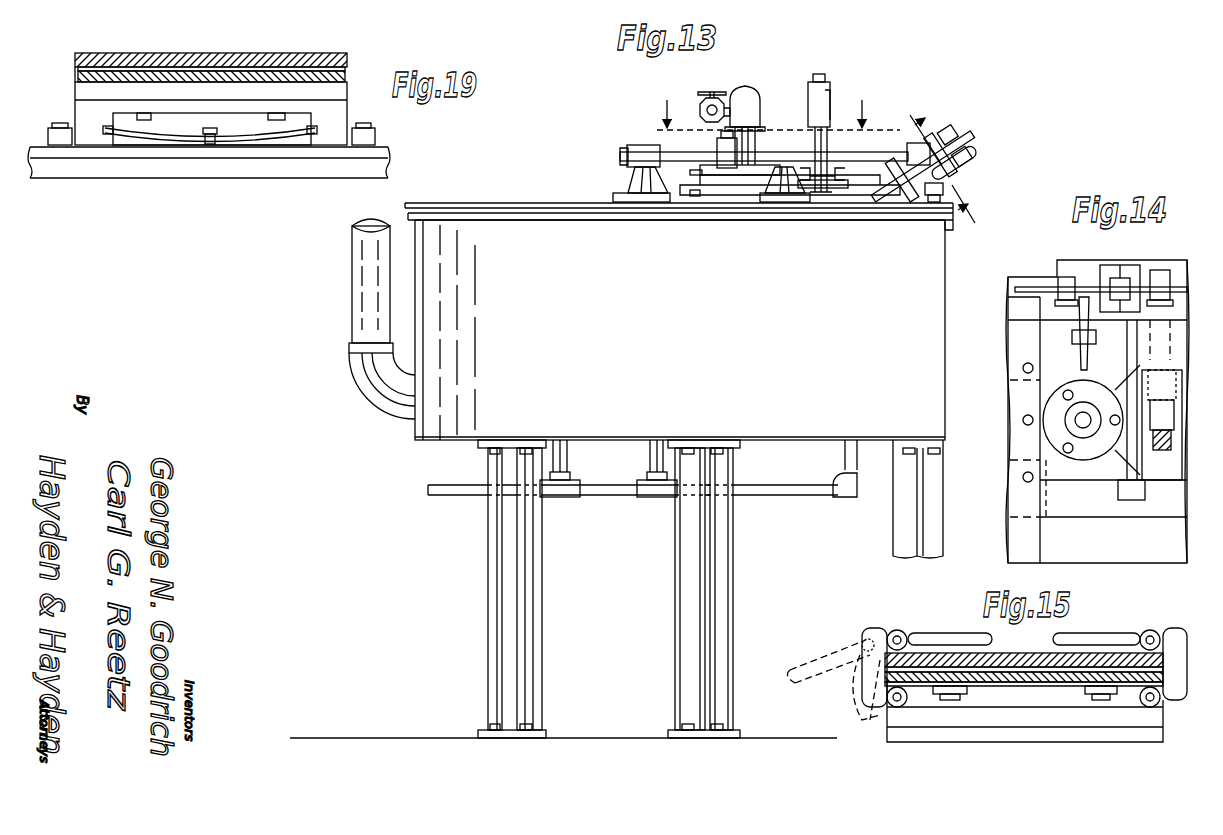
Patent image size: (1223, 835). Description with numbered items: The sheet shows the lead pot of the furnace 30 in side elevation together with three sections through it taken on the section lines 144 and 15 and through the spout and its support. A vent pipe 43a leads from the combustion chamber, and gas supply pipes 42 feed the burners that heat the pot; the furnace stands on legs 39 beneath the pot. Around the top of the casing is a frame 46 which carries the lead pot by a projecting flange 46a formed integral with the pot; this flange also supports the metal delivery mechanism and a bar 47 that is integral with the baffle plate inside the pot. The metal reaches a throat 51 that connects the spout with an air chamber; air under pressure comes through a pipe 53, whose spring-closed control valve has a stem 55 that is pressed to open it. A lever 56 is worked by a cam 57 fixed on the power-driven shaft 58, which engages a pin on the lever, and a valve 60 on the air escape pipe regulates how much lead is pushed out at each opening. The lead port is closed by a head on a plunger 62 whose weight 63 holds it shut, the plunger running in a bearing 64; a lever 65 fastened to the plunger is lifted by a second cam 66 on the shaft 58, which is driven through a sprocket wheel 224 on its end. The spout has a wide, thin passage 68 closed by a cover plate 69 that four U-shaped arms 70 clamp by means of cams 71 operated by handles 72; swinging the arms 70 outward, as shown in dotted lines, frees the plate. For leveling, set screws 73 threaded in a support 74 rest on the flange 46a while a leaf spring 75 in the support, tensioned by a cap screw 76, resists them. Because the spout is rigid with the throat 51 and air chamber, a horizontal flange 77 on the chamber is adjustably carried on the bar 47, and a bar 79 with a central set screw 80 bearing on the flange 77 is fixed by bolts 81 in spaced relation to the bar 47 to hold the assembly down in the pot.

In FIG. 13, the section line 15 is at (950, 162).
In FIG. 13, the furnace 30 is at (680, 330).
In FIG. 13, the leg pipe 39 is at (525, 582).
In FIG. 13, the gas supply pipe 42 is at (650, 455).
In FIG. 13, the vent pipe 43a is at (352, 298).
In FIG. 13, the frame 46 is at (752, 210).
In FIG. 19, the projecting flange 46a is at (133, 158).
In FIG. 13, the projecting flange 46a is at (505, 203).
In FIG. 13, the bar 47 is at (690, 195).
In FIG. 14, the bar 47 is at (1030, 330).
In FIG. 19, the throat 51 is at (78, 78).
In FIG. 13, the throat 51 is at (975, 168).
In FIG. 15, the throat 51 is at (1035, 680).
In FIG. 13, the air pipe 53 is at (745, 100).
In FIG. 14, the valve stem 55 is at (1082, 357).
In FIG. 13, the lever 56 is at (740, 155).
In FIG. 14, the lever 56 is at (1093, 285).
In FIG. 13, the cam 57 is at (717, 142).
In FIG. 14, the cam 57 is at (1066, 277).
In FIG. 13, the power-driven shaft 58 is at (620, 155).
In FIG. 14, the power-driven shaft 58 is at (1025, 317).
In FIG. 13, the valve 60 is at (712, 92).
In FIG. 13, the plunger 62 is at (819, 82).
In FIG. 14, the plunger 62 is at (1165, 415).
In FIG. 13, the weight 63 is at (830, 100).
In FIG. 14, the bearing 64 is at (1160, 455).
In FIG. 13, the lever 65 is at (845, 176).
In FIG. 14, the lever 65 is at (1138, 335).
In FIG. 13, the cam 66 is at (825, 150).
In FIG. 14, the cam 66 is at (1162, 280).
In FIG. 19, the passage 68 is at (200, 70).
In FIG. 15, the passage 68 is at (1013, 665).
In FIG. 19, the cover plate 69 is at (283, 53).
In FIG. 13, the cover plate 69 is at (972, 147).
In FIG. 15, the cover plate 69 is at (1080, 655).
In FIG. 15, the U-shaped arm 70 is at (880, 700).
In FIG. 15, the clamping cam 71 is at (900, 630).
In FIG. 15, the handle 72 is at (945, 633).
In FIG. 19, the set screw 73 is at (45, 145).
In FIG. 13, the set screw 73 is at (930, 198).
In FIG. 19, the support 74 is at (85, 108).
In FIG. 19, the leaf spring 75 is at (258, 140).
In FIG. 19, the cap screw 76 is at (207, 142).
In FIG. 13, the horizontal flange 77 is at (660, 182).
In FIG. 14, the horizontal flange 77 is at (1050, 460).
In FIG. 14, the bar 79 is at (1030, 448).
In FIG. 14, the set screw 80 is at (1023, 420).
In FIG. 14, the bolt 81 is at (1023, 480).
In FIG. 13, the section line 144 is at (774, 106).
In FIG. 13, the sprocket wheel 224 is at (962, 133).